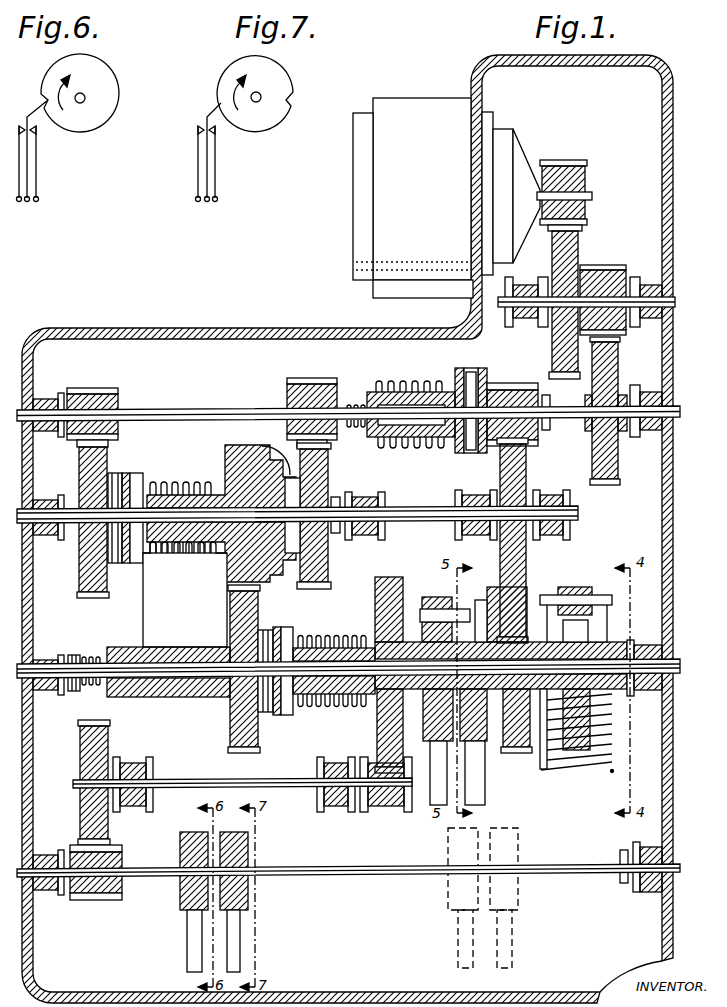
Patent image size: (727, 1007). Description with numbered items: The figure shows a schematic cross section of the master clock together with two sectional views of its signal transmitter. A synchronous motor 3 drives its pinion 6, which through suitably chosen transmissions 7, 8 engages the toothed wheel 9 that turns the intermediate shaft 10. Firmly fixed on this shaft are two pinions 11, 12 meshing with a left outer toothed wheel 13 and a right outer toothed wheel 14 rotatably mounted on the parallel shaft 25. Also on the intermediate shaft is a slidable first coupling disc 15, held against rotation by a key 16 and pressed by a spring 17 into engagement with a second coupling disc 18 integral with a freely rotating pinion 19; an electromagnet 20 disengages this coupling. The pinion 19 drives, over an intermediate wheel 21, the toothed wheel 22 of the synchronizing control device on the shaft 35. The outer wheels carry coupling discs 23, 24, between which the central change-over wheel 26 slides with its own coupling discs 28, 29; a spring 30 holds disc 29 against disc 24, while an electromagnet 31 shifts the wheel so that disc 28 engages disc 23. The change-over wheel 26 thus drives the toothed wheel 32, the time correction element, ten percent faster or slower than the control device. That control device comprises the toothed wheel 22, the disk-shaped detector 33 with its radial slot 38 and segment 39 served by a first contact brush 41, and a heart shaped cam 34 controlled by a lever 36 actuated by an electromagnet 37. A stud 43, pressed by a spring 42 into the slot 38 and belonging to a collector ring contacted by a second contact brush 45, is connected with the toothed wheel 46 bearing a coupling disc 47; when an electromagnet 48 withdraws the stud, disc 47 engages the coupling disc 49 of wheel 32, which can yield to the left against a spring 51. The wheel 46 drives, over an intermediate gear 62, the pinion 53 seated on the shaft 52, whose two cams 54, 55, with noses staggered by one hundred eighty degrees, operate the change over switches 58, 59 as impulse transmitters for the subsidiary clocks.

In FIG. 1, the synchronous motor 3 is at (428, 103).
In FIG. 1, the pinion 6 is at (562, 170).
In FIG. 1, the transmission 7 is at (579, 250).
In FIG. 1, the transmission 8 is at (604, 275).
In FIG. 1, the toothed wheel 9 is at (621, 364).
In FIG. 1, the intermediate shaft 10 is at (682, 414).
In FIG. 1, the pinion 11 is at (92, 388).
In FIG. 1, the pinion 12 is at (312, 381).
In FIG. 1, the left outer toothed wheel 13 is at (78, 460).
In FIG. 1, the right outer toothed wheel 14 is at (330, 470).
In FIG. 1, the first coupling disc 15 is at (461, 372).
In FIG. 1, the key 16 is at (397, 380).
In FIG. 1, the spring 17 is at (345, 400).
In FIG. 1, the second coupling disc 18 is at (480, 372).
In FIG. 1, the pinion 19 is at (504, 395).
In FIG. 1, the electromagnet 20 is at (412, 450).
In FIG. 1, the intermediate wheel 21 is at (528, 468).
In FIG. 1, the toothed wheel 22 is at (517, 752).
In FIG. 1, the coupling disc 23 is at (79, 567).
In FIG. 1, the coupling disc 24 is at (330, 560).
In FIG. 1, the parallel shaft 25 is at (388, 515).
In FIG. 1, the central change-over wheel 26 is at (233, 462).
In FIG. 1, the coupling disc 28 is at (142, 472).
In FIG. 1, the coupling disc 29 is at (265, 447).
In FIG. 1, the spring 30 is at (122, 560).
In FIG. 1, the electromagnet 31 is at (196, 553).
In FIG. 1, the toothed wheel 32 is at (230, 626).
In FIG. 1, the detector 33 is at (378, 735).
In FIG. 1, the heart shaped cam 34 is at (608, 633).
In FIG. 1, the shaft 35 is at (72, 655).
In FIG. 1, the lever 36 is at (566, 587).
In FIG. 1, the electromagnet 37 is at (590, 765).
In FIG. 1, the radial slot 38 is at (525, 586).
In FIG. 1, the segment 39 is at (465, 608).
In FIG. 1, the first contact brush 41 is at (486, 797).
In FIG. 1, the spring 42 is at (287, 627).
In FIG. 1, the stud 43 is at (426, 598).
In FIG. 1, the second contact brush 45 is at (410, 804).
In FIG. 1, the toothed wheel 46 is at (384, 577).
In FIG. 1, the coupling disc 47 is at (302, 712).
In FIG. 1, the electromagnet 48 is at (334, 632).
In FIG. 1, the coupling disc 49 is at (272, 714).
In FIG. 1, the spring 51 is at (94, 655).
In FIG. 6, the shaft 52 is at (86, 99).
In FIG. 7, the shaft 52 is at (262, 99).
In FIG. 1, the shaft 52 is at (340, 875).
In FIG. 1, the pinion 53 is at (98, 900).
In FIG. 6, the cam 54 is at (100, 74).
In FIG. 1, the cam 54 is at (181, 838).
In FIG. 7, the cam 55 is at (272, 80).
In FIG. 1, the cam 55 is at (249, 846).
In FIG. 6, the change over switch 58 is at (28, 178).
In FIG. 1, the change over switch 58 is at (190, 948).
In FIG. 7, the change over switch 59 is at (208, 175).
In FIG. 1, the change over switch 59 is at (236, 943).
In FIG. 1, the intermediate gear 62 is at (108, 746).